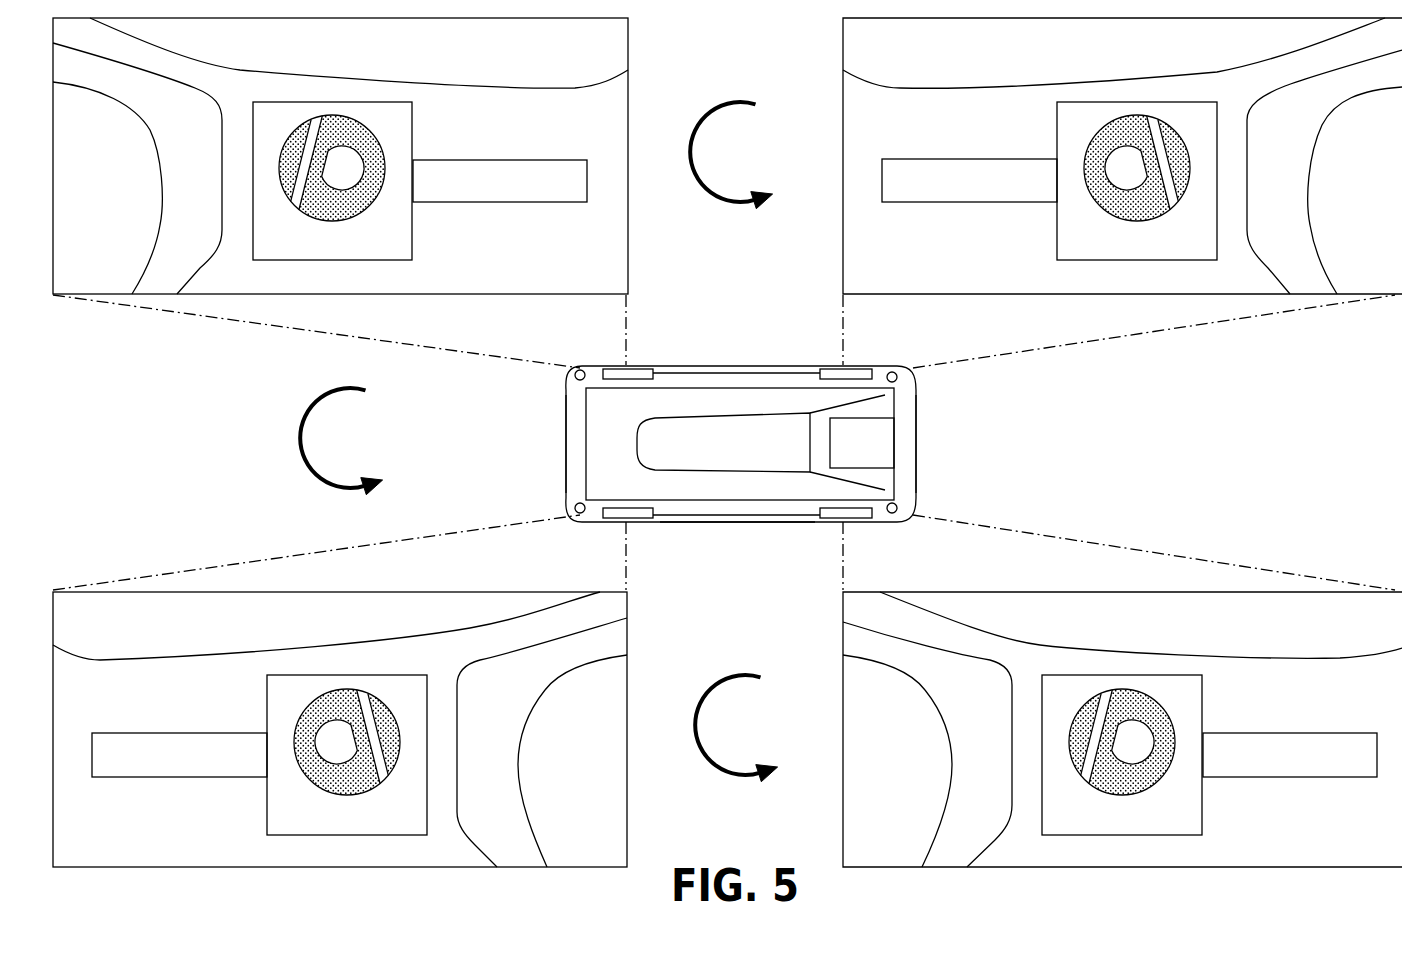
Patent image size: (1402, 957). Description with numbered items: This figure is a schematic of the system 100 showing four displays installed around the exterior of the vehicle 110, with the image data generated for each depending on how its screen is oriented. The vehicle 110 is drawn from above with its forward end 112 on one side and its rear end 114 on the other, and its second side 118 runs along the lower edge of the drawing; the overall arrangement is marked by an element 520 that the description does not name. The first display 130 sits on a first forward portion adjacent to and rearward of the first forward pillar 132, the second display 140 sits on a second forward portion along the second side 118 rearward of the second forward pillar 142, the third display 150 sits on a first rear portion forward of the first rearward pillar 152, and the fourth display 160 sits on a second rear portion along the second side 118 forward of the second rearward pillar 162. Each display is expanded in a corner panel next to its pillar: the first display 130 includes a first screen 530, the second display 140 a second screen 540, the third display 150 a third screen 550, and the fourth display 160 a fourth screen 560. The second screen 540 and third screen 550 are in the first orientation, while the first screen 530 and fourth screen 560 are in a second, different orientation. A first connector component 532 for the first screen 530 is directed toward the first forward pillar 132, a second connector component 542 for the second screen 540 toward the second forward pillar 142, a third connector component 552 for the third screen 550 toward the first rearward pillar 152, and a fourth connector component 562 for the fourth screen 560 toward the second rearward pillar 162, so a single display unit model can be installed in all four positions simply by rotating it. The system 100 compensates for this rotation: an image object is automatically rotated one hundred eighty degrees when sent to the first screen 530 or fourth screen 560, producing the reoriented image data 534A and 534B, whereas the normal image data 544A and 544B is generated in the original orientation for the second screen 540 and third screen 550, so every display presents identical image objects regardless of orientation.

The system 100 is at (742, 444).
The vehicle 110 is at (718, 453).
The forward end 112 is at (540, 438).
The rear end 114 is at (945, 438).
The second side 118 is at (746, 545).
The first display unit 130 is at (645, 350).
The first forward pillar 132 is at (392, 156).
The second display unit 140 is at (645, 535).
The second forward pillar 142 is at (389, 729).
The third display unit 150 is at (823, 350).
The first rearward pillar 152 is at (1071, 156).
The fourth display unit 160 is at (823, 535).
The second rearward pillar 162 is at (1071, 729).
The camera orientation arrangement 520 is at (1245, 485).
The first screen 530 is at (384, 144).
The first connector component 532 is at (493, 203).
The reoriented image data 534A is at (400, 128).
The reoriented image data 534B is at (1188, 705).
The second screen 540 is at (294, 718).
The second connector component 542 is at (178, 778).
The normal image data 544A is at (280, 705).
The normal image data 544B is at (1070, 130).
The third screen 550 is at (1084, 144).
The third connector component 552 is at (968, 203).
The fourth screen 560 is at (1173, 717).
The fourth connector component 562 is at (1283, 778).